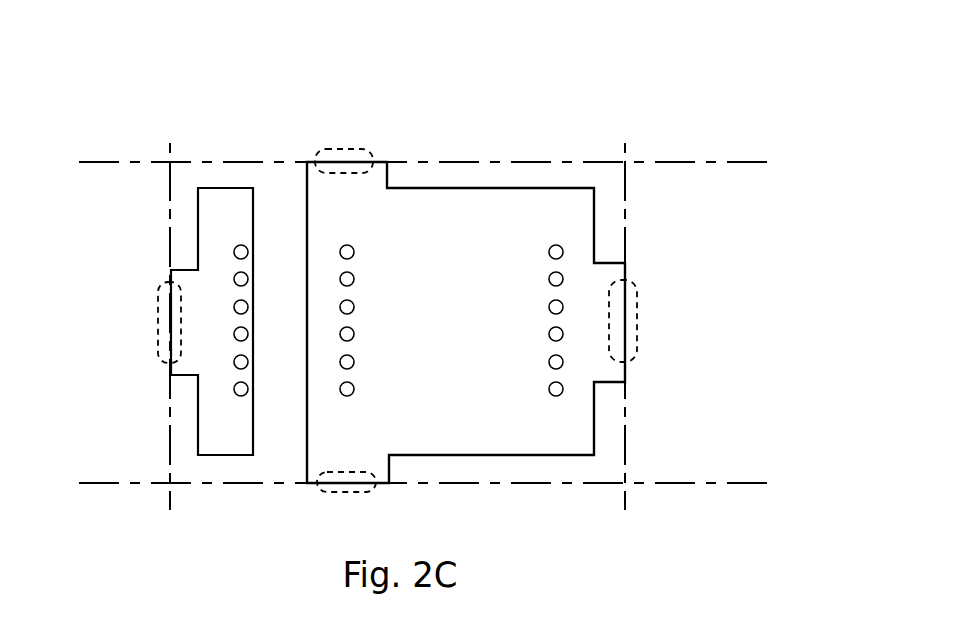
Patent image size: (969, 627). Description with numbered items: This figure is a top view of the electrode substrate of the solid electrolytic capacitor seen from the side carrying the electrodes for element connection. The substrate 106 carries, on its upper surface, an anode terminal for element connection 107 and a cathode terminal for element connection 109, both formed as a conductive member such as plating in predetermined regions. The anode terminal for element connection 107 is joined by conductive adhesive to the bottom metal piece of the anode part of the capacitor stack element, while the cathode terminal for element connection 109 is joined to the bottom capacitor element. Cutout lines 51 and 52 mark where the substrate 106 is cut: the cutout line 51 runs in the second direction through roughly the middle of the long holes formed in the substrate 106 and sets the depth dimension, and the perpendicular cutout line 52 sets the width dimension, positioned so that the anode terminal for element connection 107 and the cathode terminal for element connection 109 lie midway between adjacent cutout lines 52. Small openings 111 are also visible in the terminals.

The cutout line 51 is at (398, 307).
The cutout line 52 is at (445, 324).
The substrate 106 is at (605, 212).
The anode terminal for element connection 107 is at (208, 203).
The cathode terminal for element connection 109 is at (481, 218).
The through holes 111 is at (238, 253).